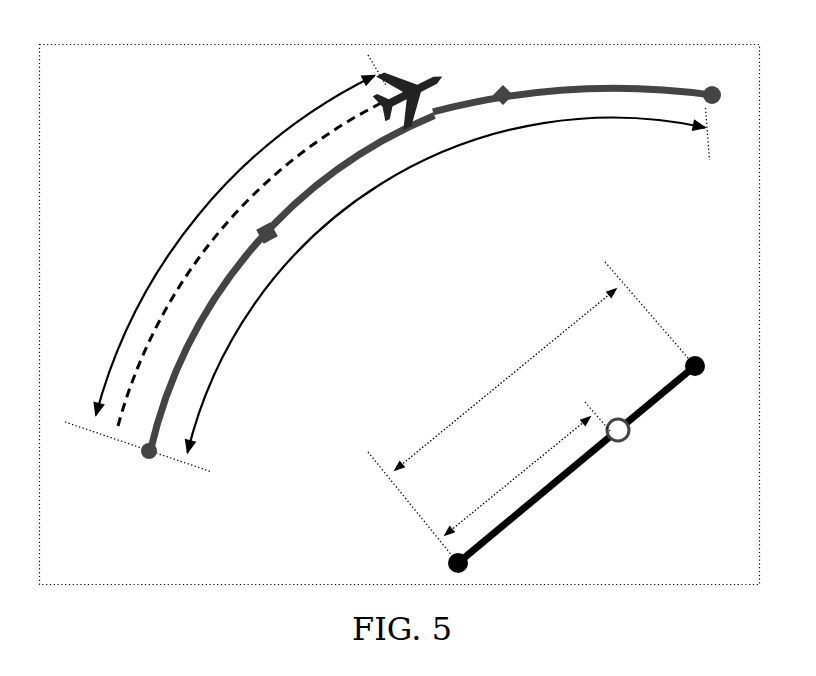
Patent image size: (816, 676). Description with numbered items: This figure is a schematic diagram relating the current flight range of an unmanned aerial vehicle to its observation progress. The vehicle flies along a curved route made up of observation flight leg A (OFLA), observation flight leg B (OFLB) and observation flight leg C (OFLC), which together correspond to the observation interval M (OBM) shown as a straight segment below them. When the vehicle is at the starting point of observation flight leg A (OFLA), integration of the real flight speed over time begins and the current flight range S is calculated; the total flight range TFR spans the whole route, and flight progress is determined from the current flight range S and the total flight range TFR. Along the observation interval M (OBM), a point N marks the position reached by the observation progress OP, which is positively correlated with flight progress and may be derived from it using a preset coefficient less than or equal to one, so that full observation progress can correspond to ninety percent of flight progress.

The current flight range S is at (234, 245).
The observation flight leg A OFLA is at (287, 288).
The observation flight leg B OFLB is at (252, 263).
The observation flight leg C OFLC is at (577, 97).
The total flight range TFR is at (446, 285).
The observation interval M OBM is at (576, 464).
The node point N is at (630, 438).
The observation progress OP is at (517, 476).